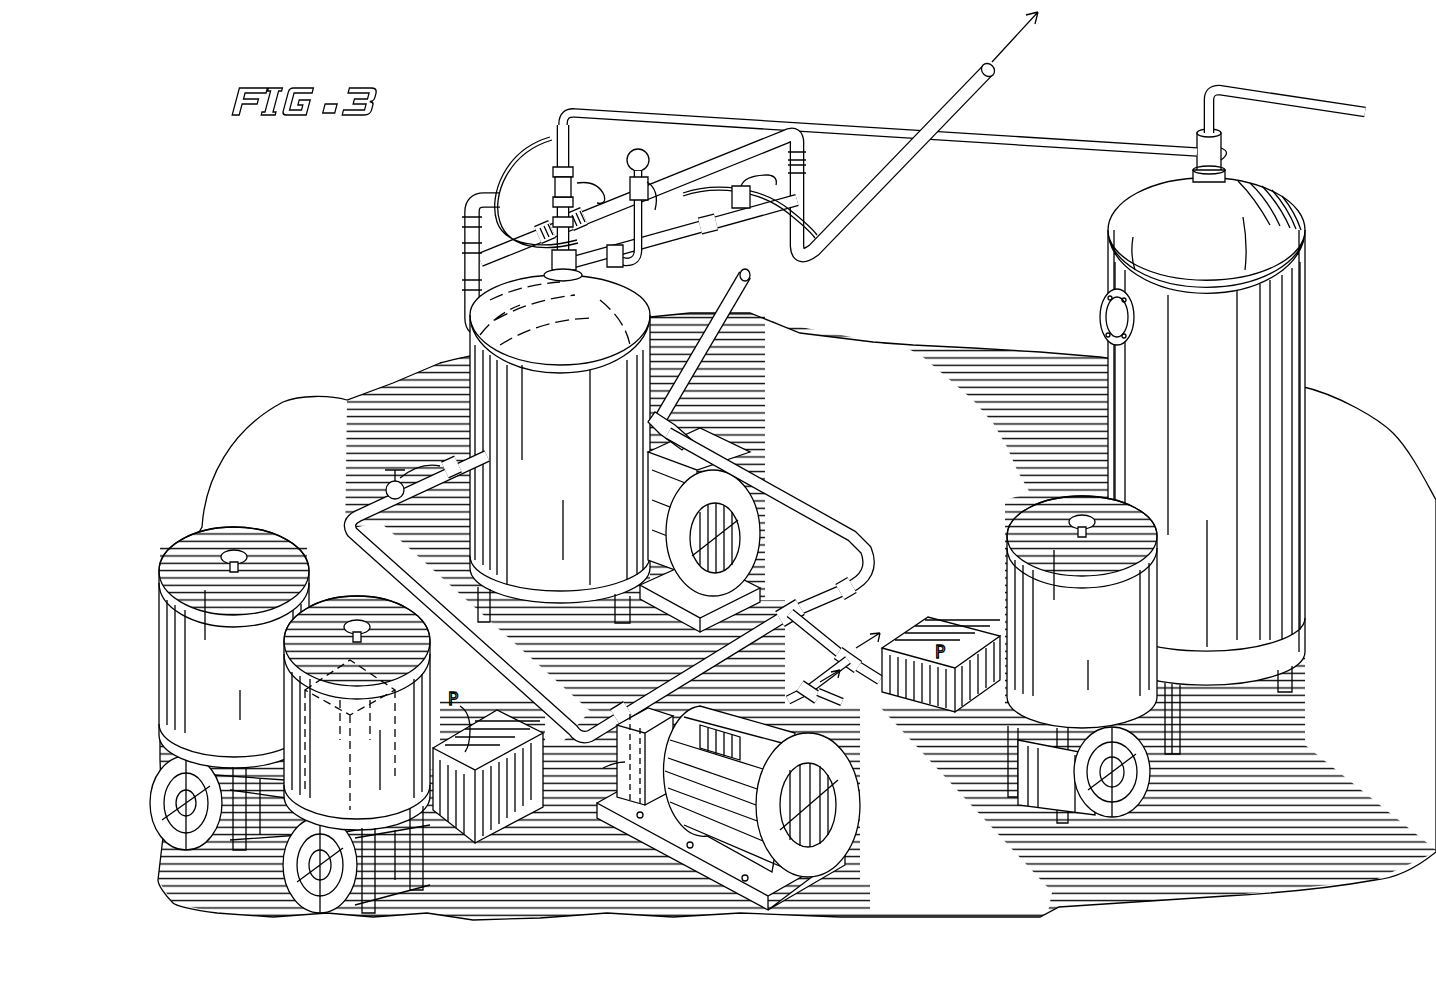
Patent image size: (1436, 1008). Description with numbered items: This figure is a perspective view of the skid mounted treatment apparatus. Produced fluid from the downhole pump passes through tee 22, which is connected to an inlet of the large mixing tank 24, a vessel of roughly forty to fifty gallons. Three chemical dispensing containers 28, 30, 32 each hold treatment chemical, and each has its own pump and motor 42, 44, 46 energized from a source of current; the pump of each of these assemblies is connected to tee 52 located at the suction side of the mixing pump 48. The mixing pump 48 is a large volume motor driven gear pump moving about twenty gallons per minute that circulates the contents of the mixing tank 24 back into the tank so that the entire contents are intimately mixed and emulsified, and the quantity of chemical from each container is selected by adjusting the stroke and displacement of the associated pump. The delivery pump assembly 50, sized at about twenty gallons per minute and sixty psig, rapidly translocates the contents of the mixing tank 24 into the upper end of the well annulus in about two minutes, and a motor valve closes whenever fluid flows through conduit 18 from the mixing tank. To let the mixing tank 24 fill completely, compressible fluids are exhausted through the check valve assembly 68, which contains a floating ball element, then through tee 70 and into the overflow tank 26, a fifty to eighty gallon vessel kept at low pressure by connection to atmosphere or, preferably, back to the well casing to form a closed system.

The conduit 18 is at (748, 280).
The tee 22 is at (789, 136).
The mixing tank 24 is at (582, 472).
The overflow tank 26 is at (1222, 455).
The container 28 is at (248, 686).
The container 30 is at (381, 817).
The container 32 is at (1097, 660).
The pump and motor 42 is at (792, 690).
The pump and motor 44 is at (830, 702).
The pump and motor 46 is at (1118, 812).
The mixing pump 48 is at (850, 822).
The delivery pump assembly 50 is at (708, 590).
The tee 52 is at (788, 605).
The check valve assembly 68 is at (578, 172).
The tee 70 is at (1158, 152).